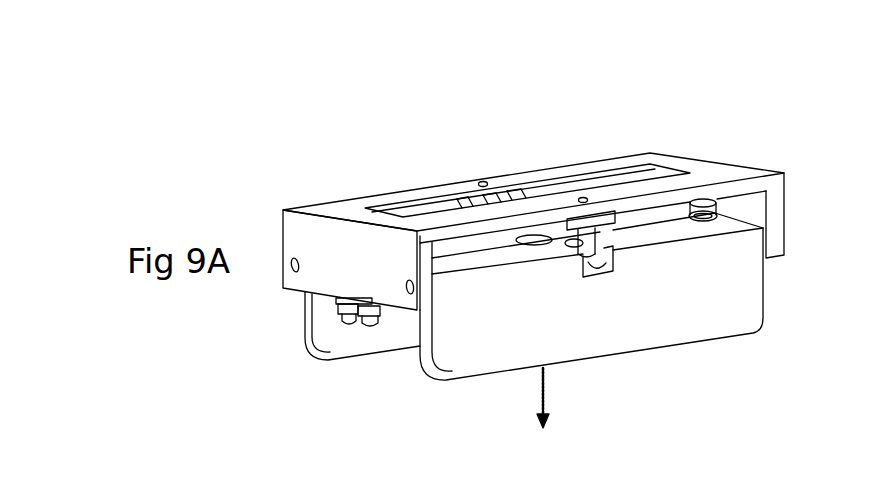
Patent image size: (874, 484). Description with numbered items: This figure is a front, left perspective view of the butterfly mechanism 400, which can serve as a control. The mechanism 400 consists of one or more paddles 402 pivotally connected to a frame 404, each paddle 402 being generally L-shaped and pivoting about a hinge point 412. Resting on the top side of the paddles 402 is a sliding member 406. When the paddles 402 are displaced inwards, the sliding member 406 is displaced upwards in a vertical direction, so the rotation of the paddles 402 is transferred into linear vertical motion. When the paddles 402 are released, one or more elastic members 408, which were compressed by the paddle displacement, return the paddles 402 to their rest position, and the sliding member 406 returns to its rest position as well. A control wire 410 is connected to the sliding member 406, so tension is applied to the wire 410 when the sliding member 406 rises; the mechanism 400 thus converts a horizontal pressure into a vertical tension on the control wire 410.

The butterfly mechanism 400 is at (702, 116).
The paddle 402 is at (325, 362).
The frame 404 is at (778, 210).
The sliding member 406 is at (513, 200).
The elastic member 408 is at (713, 203).
The control wire 410 is at (546, 390).
The hinge point 412 is at (294, 258).